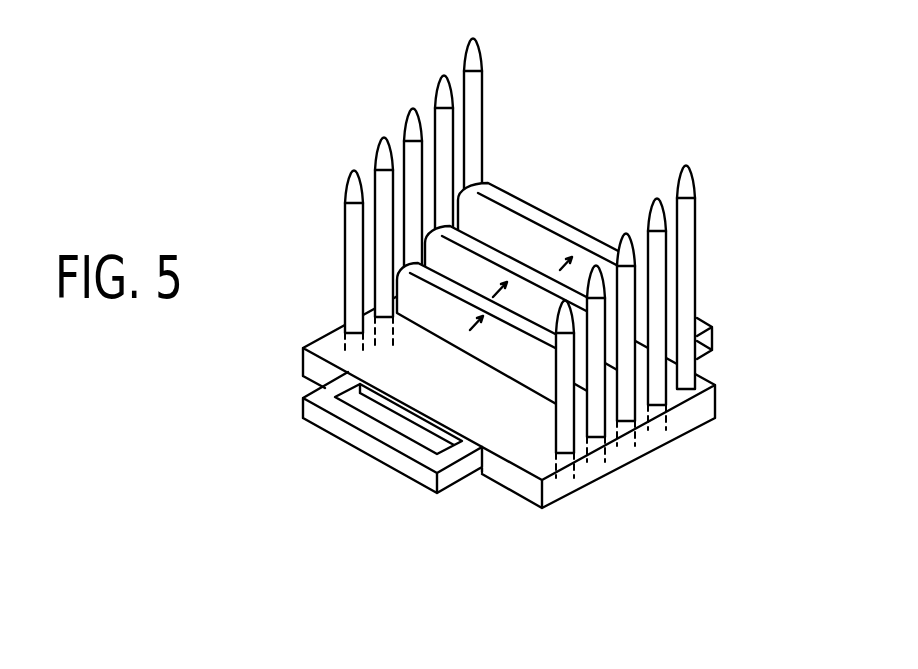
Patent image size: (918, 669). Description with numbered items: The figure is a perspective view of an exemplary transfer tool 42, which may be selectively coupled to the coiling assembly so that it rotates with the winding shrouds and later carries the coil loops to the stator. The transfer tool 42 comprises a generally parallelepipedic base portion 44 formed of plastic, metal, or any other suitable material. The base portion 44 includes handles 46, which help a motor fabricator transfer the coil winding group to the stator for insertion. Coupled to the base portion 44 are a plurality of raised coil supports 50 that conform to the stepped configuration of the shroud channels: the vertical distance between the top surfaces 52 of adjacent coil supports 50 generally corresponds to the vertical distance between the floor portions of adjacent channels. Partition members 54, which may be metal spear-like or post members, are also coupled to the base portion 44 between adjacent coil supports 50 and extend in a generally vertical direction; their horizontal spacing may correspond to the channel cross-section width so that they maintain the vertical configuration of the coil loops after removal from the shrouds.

The transfer tool 42 is at (499, 312).
The base portion 44 is at (522, 497).
The handles 46 is at (422, 478).
The coil supports 50 is at (675, 400).
The top surfaces 52 is at (418, 264).
The partition members 54 is at (497, 255).